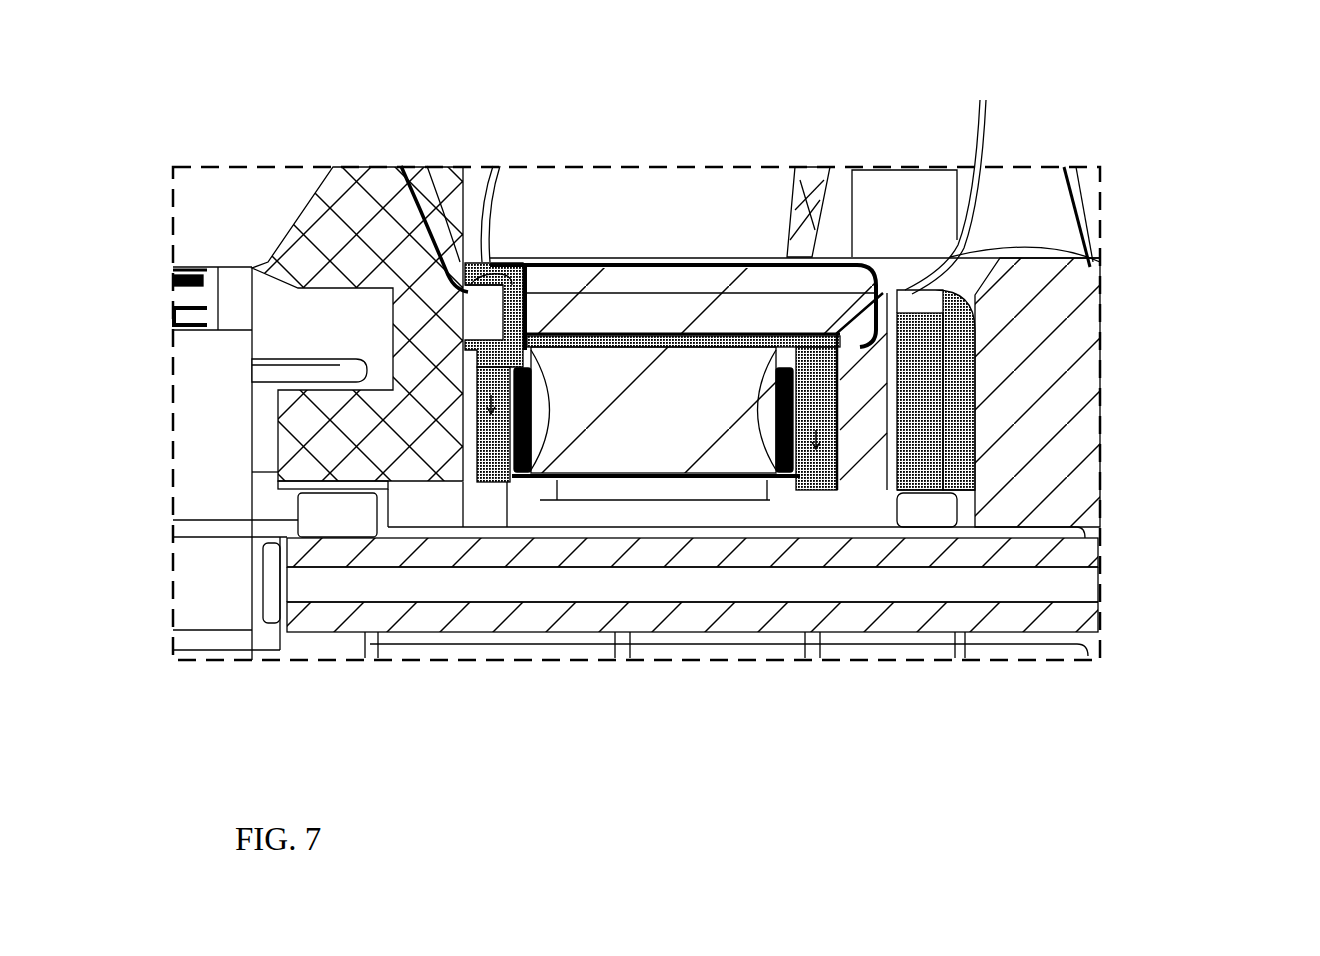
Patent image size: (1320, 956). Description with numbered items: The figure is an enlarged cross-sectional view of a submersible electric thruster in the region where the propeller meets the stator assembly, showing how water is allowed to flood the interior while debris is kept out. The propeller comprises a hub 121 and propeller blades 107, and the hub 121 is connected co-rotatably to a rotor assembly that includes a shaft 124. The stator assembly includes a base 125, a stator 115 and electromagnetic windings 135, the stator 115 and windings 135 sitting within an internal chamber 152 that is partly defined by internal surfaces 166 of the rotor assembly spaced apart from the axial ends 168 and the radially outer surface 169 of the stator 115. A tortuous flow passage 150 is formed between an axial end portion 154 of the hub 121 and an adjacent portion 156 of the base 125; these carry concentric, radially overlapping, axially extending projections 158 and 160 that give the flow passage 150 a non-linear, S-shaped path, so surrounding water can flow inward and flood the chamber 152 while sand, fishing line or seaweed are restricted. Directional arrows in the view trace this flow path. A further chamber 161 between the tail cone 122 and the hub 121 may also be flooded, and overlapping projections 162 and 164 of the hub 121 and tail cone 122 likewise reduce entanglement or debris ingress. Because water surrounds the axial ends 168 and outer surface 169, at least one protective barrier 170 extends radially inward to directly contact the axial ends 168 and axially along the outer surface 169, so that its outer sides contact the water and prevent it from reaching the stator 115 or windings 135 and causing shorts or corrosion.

The propeller blades 107 is at (805, 175).
The stator 115 is at (662, 445).
The hub 121 is at (832, 262).
The tail cone 122 is at (1053, 370).
The shaft 124 is at (1040, 546).
The base 125 is at (410, 267).
The electromagnetic windings 135 is at (488, 486).
The flow passage 150 is at (465, 258).
The internal chamber 152 is at (640, 333).
The axial end portion of the hub 154 is at (485, 205).
The adjacent portion of the stator base 156 is at (420, 190).
The axially extending projection of the hub 158 is at (507, 255).
The axially extending projection of the base 160 is at (388, 188).
The chamber 161 is at (957, 418).
The projection of the hub 162 is at (943, 272).
The projection of the tail cone 164 is at (950, 257).
The internal surfaces of the rotor assembly 166 is at (958, 177).
The axial ends of the stator 168 is at (522, 475).
The radially outer surface of the stator 169 is at (640, 337).
The protective barrier 170 is at (600, 480).